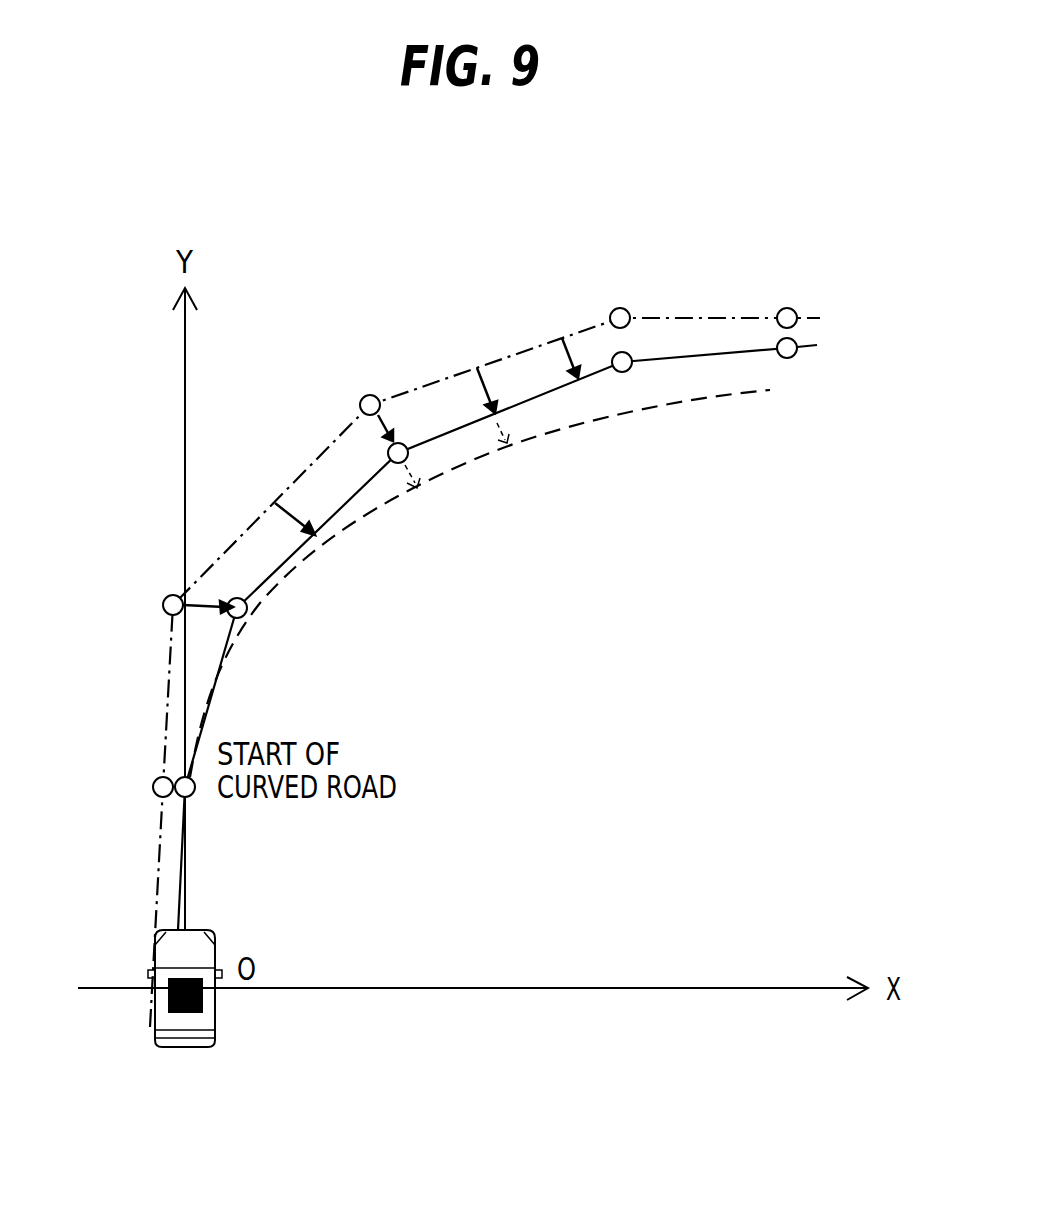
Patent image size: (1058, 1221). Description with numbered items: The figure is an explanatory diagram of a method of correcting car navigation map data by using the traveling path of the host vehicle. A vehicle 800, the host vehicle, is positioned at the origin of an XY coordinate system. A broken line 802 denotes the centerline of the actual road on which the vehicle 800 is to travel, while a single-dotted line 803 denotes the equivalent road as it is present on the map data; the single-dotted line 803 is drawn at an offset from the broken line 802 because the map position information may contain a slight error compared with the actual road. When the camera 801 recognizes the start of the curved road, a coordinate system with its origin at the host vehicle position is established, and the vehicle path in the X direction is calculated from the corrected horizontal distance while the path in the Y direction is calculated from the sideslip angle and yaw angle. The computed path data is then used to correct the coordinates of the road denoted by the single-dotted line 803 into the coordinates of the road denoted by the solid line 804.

The vehicle 800 is at (203, 1020).
The camera 801 is at (225, 887).
The broken line 802 is at (717, 397).
The single-dotted line 803 is at (720, 315).
The solid line 804 is at (353, 500).